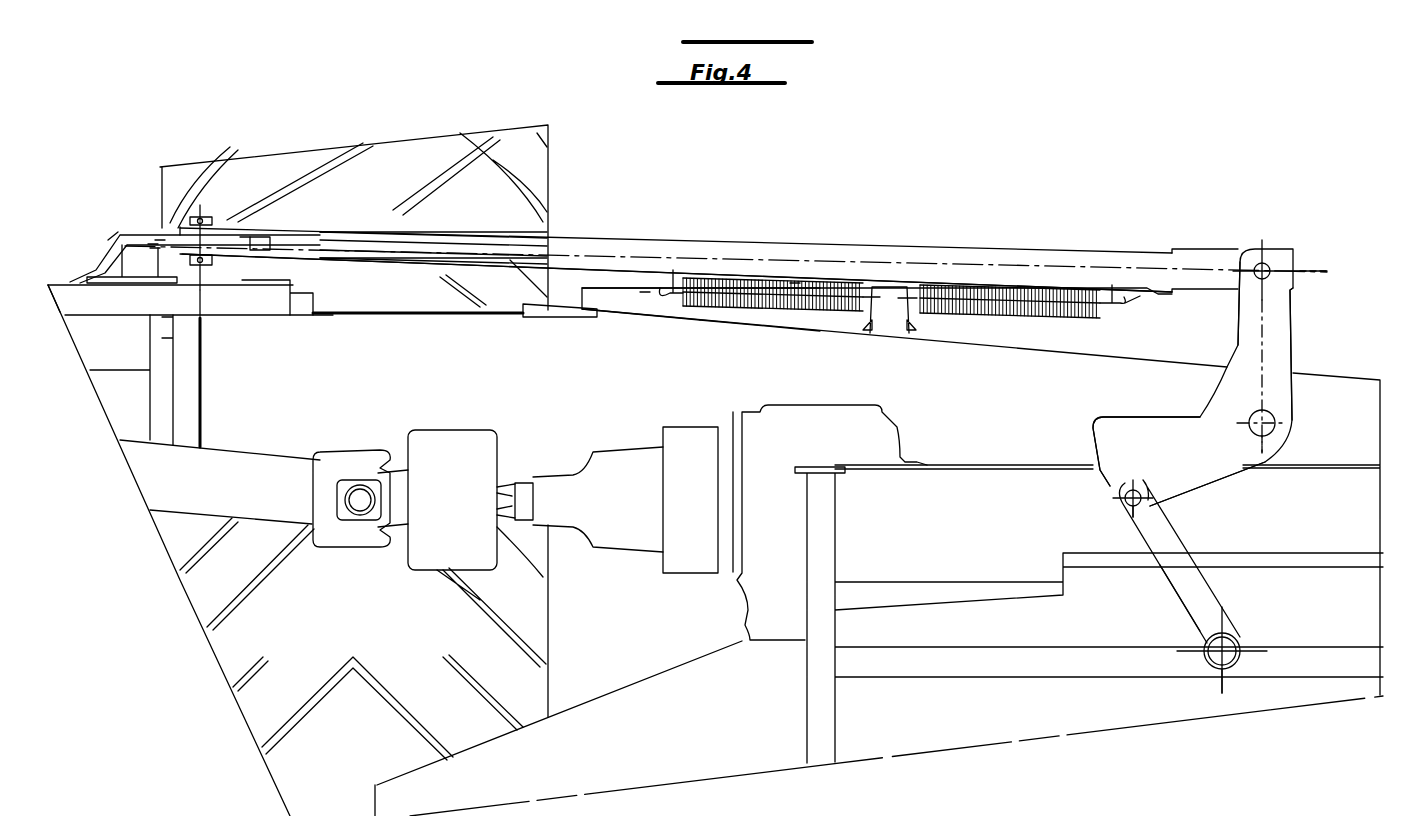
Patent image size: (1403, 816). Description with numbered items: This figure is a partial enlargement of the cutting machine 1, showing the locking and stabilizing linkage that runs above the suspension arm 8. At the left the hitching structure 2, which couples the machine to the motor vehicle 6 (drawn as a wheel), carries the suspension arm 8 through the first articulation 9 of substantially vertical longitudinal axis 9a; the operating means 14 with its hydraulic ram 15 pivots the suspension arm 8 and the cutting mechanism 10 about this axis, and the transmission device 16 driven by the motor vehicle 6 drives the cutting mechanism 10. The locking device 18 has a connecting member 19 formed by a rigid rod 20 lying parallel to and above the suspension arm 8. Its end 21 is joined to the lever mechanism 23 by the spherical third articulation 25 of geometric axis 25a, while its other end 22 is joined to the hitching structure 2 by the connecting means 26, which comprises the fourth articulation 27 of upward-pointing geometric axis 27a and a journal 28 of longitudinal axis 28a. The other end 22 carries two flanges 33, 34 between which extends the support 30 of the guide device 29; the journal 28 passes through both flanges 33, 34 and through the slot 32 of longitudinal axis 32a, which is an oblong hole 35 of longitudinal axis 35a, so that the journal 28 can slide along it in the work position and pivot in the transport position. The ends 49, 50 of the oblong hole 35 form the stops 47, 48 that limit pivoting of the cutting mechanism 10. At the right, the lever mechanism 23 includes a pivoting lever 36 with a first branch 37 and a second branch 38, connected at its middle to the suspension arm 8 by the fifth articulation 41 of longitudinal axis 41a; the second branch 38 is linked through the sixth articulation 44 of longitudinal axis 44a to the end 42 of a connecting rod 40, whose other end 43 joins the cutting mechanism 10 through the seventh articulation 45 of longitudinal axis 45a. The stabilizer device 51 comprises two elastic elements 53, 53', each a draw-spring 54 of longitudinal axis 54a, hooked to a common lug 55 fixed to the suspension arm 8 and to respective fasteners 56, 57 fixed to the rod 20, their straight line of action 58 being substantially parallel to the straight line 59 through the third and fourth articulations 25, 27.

The cutting machine 1 is at (645, 672).
The hitching structure 2 is at (132, 412).
The motor vehicle 6 is at (554, 165).
The suspension arm 8 is at (1344, 441).
The first articulation 9 is at (204, 390).
The longitudinal axis 9a is at (212, 222).
The cutting mechanism 10 is at (572, 773).
The operating means 14 is at (87, 320).
The hydraulic ram 15 is at (123, 307).
The transmission device 16 is at (186, 514).
The locking device 18 is at (943, 246).
The connecting member 19 is at (1021, 248).
The rod 20 is at (883, 248).
The end 21 is at (1214, 244).
The other end 22 is at (313, 228).
The lever mechanism 23 is at (1297, 318).
The third articulation 25 is at (1268, 264).
The geometric axis 25a is at (1290, 268).
The connecting means 26 is at (214, 214).
The fourth articulation 27 is at (216, 268).
The geometric axis 27a is at (218, 226).
The journal 28 is at (173, 220).
The longitudinal axis 28a is at (218, 224).
The guide device 29 is at (117, 226).
The support 30 is at (100, 253).
The slot 32 is at (183, 302).
The longitudinal axis 32a is at (705, 200).
The flange 33 is at (348, 234).
The flange 34 is at (360, 258).
The oblong hole 35 is at (153, 235).
The longitudinal axis 35a is at (705, 208).
The pivoting lever 36 is at (1285, 348).
The first branch 37 is at (1240, 345).
The second branch 38 is at (1205, 474).
The connecting rod 40 is at (1175, 585).
The fifth articulation 41 is at (1250, 418).
The longitudinal axis 41a is at (1250, 430).
The end 42 is at (1170, 515).
The other end 43 is at (1237, 627).
The sixth articulation 44 is at (1122, 496).
The longitudinal axis 44a is at (1123, 512).
The seventh articulation 45 is at (1208, 665).
The longitudinal axis 45a is at (1230, 664).
The stop 47 is at (205, 266).
The stop 48 is at (255, 254).
The end 49 is at (157, 256).
The end 50 is at (248, 226).
The stabilizer device 51 is at (794, 281).
The elastic element 53 is at (761, 325).
The elastic element 53' is at (1022, 346).
The draw-spring 54 is at (808, 306).
The longitudinal axis 54a is at (618, 293).
The common lug 55 is at (893, 325).
The fastener 56 is at (632, 290).
The fastener 57 is at (1133, 297).
The straight line of action 58 is at (607, 360).
The straight line 59 is at (680, 253).